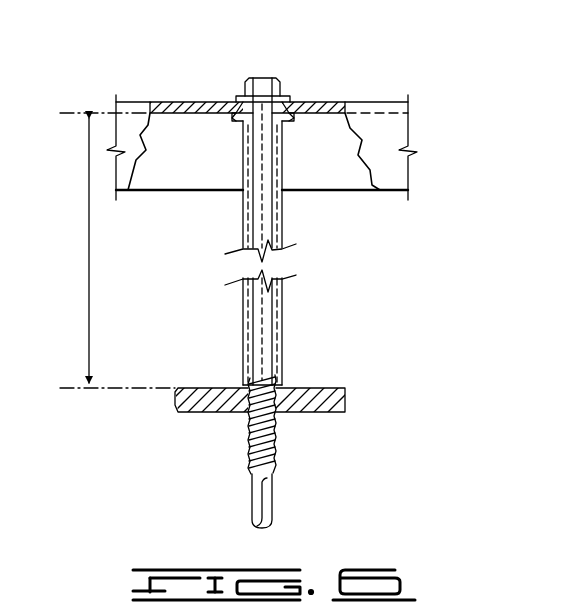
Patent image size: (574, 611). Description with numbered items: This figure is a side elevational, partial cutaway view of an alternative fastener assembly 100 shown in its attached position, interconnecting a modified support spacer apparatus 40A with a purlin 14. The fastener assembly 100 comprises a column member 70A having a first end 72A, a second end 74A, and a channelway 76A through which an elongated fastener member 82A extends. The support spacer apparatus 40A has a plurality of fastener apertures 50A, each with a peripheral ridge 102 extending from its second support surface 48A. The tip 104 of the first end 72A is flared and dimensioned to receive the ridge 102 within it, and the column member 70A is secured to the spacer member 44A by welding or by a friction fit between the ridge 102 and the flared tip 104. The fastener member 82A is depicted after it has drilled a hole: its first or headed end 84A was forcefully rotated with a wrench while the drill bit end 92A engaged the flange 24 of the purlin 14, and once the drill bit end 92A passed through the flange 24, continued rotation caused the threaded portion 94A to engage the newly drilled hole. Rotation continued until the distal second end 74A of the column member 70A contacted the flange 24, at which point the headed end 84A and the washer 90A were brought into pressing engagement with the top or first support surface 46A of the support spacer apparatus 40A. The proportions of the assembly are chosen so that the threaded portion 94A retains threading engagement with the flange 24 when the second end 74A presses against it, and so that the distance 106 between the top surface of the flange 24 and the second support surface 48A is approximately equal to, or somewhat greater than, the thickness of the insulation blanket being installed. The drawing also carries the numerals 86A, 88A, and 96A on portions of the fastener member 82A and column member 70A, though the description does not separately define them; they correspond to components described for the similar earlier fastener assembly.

The purlin 14 is at (171, 410).
The flange 24 is at (330, 388).
The support spacer apparatus 40A is at (132, 99).
The spacer member 44A is at (188, 100).
The first support surface 46A is at (363, 101).
The second support surface 48A is at (347, 150).
The fastener aperture 50A is at (296, 101).
The column member 70A is at (283, 216).
The first end 72A is at (243, 178).
The second end 74A is at (276, 383).
The channelway 76A is at (283, 308).
The fastener member 82A is at (258, 212).
The first or headed end 84A is at (282, 95).
The bolt shank 86A is at (262, 236).
The drill tip 88A is at (258, 508).
The washer 90A is at (240, 96).
The drill bit end 92A is at (272, 517).
The threaded portion 94A is at (278, 432).
The sleeve flange 96A is at (243, 143).
The fastener assembly 100 is at (263, 78).
The peripheral ridge 102 is at (284, 124).
The tip 104 is at (240, 124).
The distance 106 is at (89, 268).